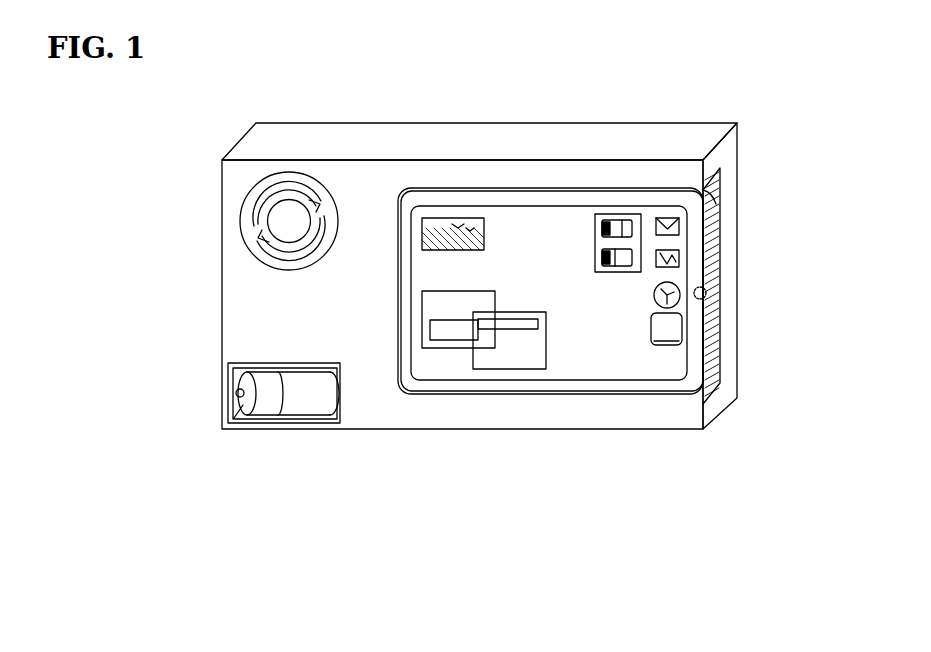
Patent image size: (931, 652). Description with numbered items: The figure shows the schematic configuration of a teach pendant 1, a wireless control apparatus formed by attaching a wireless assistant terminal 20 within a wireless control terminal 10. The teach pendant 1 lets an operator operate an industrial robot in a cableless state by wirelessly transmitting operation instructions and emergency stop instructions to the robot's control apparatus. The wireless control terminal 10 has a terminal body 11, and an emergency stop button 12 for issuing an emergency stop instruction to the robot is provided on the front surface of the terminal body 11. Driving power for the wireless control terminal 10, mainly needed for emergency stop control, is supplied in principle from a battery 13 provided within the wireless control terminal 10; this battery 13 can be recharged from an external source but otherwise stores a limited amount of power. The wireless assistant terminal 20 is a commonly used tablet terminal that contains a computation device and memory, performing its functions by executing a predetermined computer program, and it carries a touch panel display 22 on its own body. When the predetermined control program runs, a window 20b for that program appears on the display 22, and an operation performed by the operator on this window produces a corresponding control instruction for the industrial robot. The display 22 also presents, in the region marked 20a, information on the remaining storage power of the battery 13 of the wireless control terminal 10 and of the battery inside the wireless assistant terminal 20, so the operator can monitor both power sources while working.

The teach pendant 1 is at (730, 538).
The wireless control terminal 10 is at (122, 213).
The terminal body 11 is at (253, 303).
The emergency stop button 12 is at (253, 221).
The battery 13 is at (247, 407).
The wireless assistant terminal 20 is at (582, 387).
The remaining storage power display region 20a is at (618, 225).
The window 20b is at (508, 342).
The touch panel display 22 is at (527, 230).